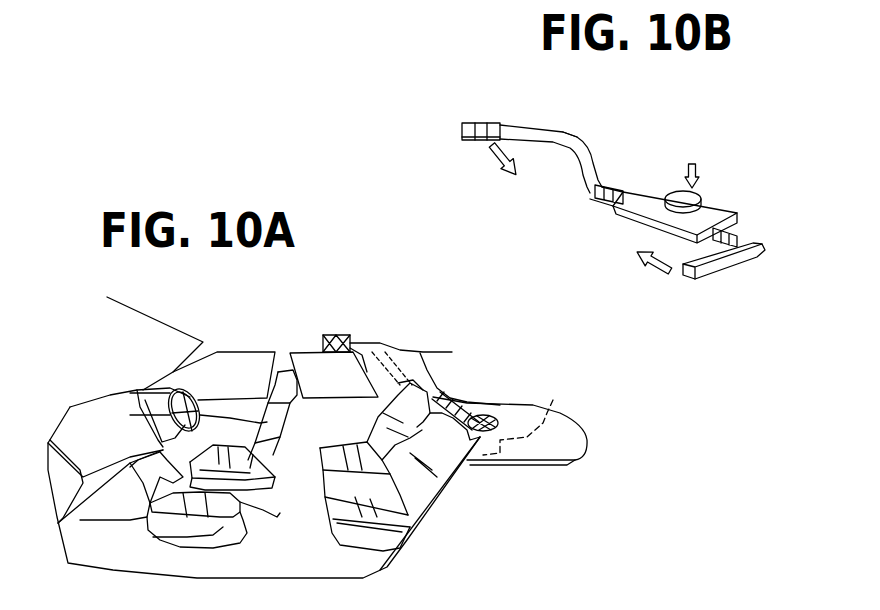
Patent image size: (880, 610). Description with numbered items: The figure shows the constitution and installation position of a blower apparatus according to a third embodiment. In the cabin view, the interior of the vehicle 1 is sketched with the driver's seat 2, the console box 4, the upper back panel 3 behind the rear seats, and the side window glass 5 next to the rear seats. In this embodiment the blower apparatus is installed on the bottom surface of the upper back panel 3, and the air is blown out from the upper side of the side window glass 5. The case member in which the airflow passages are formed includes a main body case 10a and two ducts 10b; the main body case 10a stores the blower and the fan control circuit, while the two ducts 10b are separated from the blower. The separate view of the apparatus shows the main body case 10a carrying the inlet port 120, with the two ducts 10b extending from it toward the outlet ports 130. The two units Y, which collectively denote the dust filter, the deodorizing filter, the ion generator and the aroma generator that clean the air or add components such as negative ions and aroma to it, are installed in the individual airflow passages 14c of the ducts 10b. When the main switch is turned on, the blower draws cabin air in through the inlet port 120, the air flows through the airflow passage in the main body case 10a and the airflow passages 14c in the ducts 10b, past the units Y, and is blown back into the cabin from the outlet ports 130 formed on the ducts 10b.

In FIG. 10A, the vehicle 1 is at (150, 302).
In FIG. 10A, the driver's seat 2 is at (140, 447).
In FIG. 10A, the upper back panel 3 is at (580, 427).
In FIG. 10A, the console box 4 is at (143, 490).
In FIG. 10A, the side window glass 5 is at (358, 350).
In FIG. 10A, the main body case 10a is at (553, 400).
In FIG. 10B, the main body case 10a is at (717, 212).
In FIG. 10A, the ducts 10b is at (380, 343).
In FIG. 10B, the ducts 10b is at (543, 147).
In FIG. 10B, the airflow passages 14c is at (520, 127).
In FIG. 10A, the inlet port 120 is at (494, 417).
In FIG. 10B, the inlet port 120 is at (673, 190).
In FIG. 10A, the outlet ports 130 is at (333, 335).
In FIG. 10B, the outlet ports 130 is at (470, 138).
In FIG. 10B, the unit Y is at (593, 200).